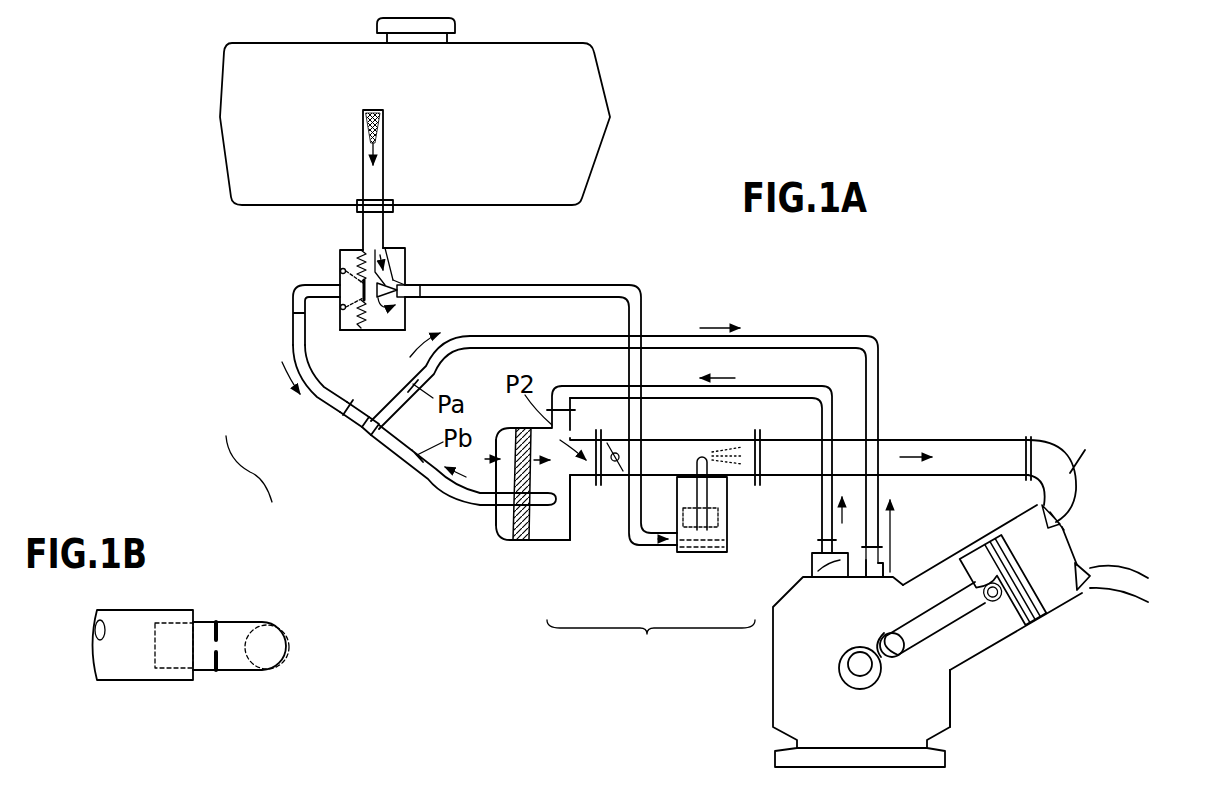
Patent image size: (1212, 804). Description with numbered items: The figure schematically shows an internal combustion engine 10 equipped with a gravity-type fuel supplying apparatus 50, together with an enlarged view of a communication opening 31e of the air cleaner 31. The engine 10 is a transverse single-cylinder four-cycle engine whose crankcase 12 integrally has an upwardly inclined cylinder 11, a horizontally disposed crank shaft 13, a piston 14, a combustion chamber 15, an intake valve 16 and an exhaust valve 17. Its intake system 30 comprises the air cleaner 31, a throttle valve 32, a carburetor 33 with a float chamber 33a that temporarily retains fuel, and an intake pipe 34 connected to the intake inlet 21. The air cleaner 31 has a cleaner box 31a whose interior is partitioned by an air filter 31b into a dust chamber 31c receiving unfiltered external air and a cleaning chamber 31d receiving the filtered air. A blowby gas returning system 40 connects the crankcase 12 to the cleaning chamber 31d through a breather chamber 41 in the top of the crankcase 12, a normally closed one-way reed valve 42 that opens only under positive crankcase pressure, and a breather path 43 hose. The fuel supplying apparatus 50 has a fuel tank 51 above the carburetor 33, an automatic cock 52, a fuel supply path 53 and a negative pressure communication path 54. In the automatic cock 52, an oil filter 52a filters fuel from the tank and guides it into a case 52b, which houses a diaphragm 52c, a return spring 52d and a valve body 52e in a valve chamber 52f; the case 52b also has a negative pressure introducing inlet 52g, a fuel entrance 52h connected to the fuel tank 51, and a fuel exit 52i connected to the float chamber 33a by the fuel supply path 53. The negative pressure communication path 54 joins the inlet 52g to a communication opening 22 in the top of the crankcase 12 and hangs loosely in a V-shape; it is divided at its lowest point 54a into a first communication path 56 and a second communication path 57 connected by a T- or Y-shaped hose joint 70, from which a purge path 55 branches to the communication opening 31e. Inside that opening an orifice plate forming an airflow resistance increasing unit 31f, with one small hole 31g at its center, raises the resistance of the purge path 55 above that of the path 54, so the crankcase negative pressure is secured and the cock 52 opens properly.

In FIG. 1A, the internal combustion engine 10 is at (770, 722).
In FIG. 1A, the cylinder 11 is at (985, 657).
In FIG. 1A, the crankcase 12 is at (950, 705).
In FIG. 1A, the crank shaft 13 is at (870, 670).
In FIG. 1A, the piston 14 is at (1012, 628).
In FIG. 1A, the combustion chamber 15 is at (1055, 605).
In FIG. 1A, the intake valve 16 is at (1064, 513).
In FIG. 1A, the exhaust valve 17 is at (1088, 570).
In FIG. 1A, the intake inlet 21 is at (1048, 453).
In FIG. 1A, the communication opening 22 is at (883, 560).
In FIG. 1A, the intake system 30 is at (651, 639).
In FIG. 1A, the air cleaner 31 is at (588, 520).
In FIG. 1A, the cleaner box 31a is at (500, 523).
In FIG. 1A, the air filter 31b is at (543, 523).
In FIG. 1A, the dust chamber 31c is at (512, 520).
In FIG. 1A, the cleaning chamber 31d is at (547, 520).
In FIG. 1A, the communication opening 31e is at (567, 520).
In FIG. 1B, the communication opening 31e is at (280, 650).
In FIG. 1B, the airflow resistance increasing unit 31f is at (227, 663).
In FIG. 1B, the small hole 31g is at (207, 647).
In FIG. 1A, the throttle valve 32 is at (613, 480).
In FIG. 1A, the carburetor 33 is at (693, 556).
In FIG. 1A, the float chamber 33a is at (727, 548).
In FIG. 1A, the intake pipe 34 is at (800, 476).
In FIG. 1A, the blowby gas returning system 40 is at (828, 390).
In FIG. 1A, the breather chamber 41 is at (820, 567).
In FIG. 1A, the reed valve 42 is at (828, 577).
In FIG. 1A, the breather path 43 is at (765, 386).
In FIG. 1A, the fuel supplying apparatus 50 is at (185, 112).
In FIG. 1A, the fuel tank 51 is at (222, 153).
In FIG. 1A, the automatic cock 52 is at (340, 248).
In FIG. 1A, the oil filter 52a is at (382, 180).
In FIG. 1A, the case 52b is at (372, 331).
In FIG. 1A, the diaphragm 52c is at (340, 252).
In FIG. 1A, the return spring 52d is at (343, 263).
In FIG. 1A, the valve body 52e is at (408, 308).
In FIG. 1A, the valve chamber 52f is at (400, 263).
In FIG. 1A, the negative pressure introducing inlet 52g is at (293, 308).
In FIG. 1A, the fuel entrance 52h is at (390, 230).
In FIG. 1A, the fuel exit 52i is at (405, 283).
In FIG. 1A, the fuel supply path 53 is at (553, 288).
In FIG. 1A, the negative pressure communication path 54 is at (247, 472).
In FIG. 1A, the lowest point 54a is at (367, 433).
In FIG. 1A, the purge path 55 is at (423, 473).
In FIG. 1B, the purge path 55 is at (143, 683).
In FIG. 1A, the first communication path 56 is at (318, 396).
In FIG. 1A, the second communication path 57 is at (393, 392).
In FIG. 1A, the hose joint 70 is at (377, 440).